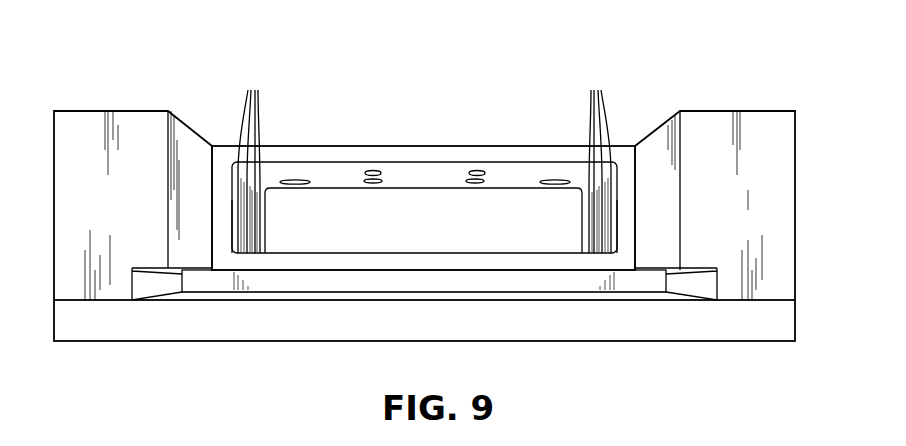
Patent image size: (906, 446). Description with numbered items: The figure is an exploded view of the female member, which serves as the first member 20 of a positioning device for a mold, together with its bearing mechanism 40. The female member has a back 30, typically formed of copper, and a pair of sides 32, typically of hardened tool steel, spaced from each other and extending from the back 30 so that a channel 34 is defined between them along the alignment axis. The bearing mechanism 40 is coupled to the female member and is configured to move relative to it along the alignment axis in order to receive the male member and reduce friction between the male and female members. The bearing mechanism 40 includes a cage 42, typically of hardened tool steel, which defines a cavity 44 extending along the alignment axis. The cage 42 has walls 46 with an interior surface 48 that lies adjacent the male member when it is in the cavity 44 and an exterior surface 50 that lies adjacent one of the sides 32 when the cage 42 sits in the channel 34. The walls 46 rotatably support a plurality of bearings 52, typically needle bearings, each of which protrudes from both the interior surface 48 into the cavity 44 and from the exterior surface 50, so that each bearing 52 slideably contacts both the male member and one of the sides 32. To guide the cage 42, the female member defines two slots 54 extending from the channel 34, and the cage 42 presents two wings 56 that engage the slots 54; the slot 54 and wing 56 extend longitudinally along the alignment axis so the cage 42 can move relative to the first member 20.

The first member 20 is at (689, 74).
The back 30 is at (610, 327).
The sides 32 is at (133, 128).
The channel 34 is at (203, 212).
The bearing mechanism 40 is at (417, 226).
The cage 42 is at (371, 150).
The cavity 44 is at (352, 213).
The walls 46 is at (220, 173).
The interior surface 48 is at (233, 216).
The exterior surface 50 is at (210, 235).
The bearings 52 is at (483, 98).
The slot 54 is at (143, 290).
The wing 56 is at (198, 285).